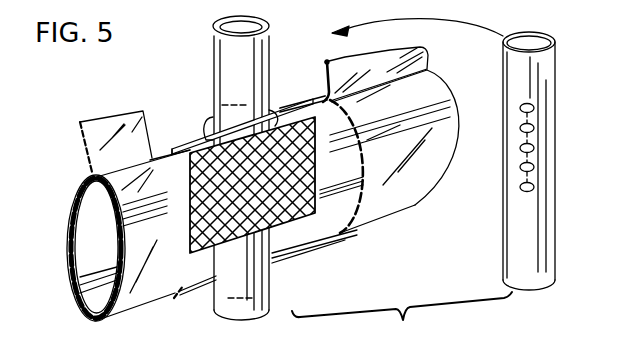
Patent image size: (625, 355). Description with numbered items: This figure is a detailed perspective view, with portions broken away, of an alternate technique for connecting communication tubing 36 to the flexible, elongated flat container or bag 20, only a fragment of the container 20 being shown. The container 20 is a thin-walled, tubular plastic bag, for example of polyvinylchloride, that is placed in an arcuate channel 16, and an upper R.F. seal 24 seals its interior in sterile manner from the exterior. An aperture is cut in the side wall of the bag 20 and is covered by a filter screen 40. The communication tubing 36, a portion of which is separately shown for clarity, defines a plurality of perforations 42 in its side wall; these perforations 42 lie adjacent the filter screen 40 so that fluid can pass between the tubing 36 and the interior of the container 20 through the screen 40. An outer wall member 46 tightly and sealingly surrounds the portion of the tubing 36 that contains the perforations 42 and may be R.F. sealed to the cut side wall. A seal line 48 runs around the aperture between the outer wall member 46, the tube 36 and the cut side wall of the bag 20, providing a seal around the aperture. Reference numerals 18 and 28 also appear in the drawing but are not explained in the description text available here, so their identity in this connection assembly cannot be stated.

The heat exchanger assembly 18 is at (421, 323).
The container or bag 20 is at (405, 200).
The upper R.F. seal 24 is at (432, 68).
The communication tubing 36 is at (213, 52).
The filter screen 40 is at (300, 232).
The perforations 42 is at (533, 176).
The outer wall member 46 is at (182, 137).
The seal line 48 is at (280, 110).
The arcuate channel 16 is at (232, 352).
The member 28 is at (307, 352).